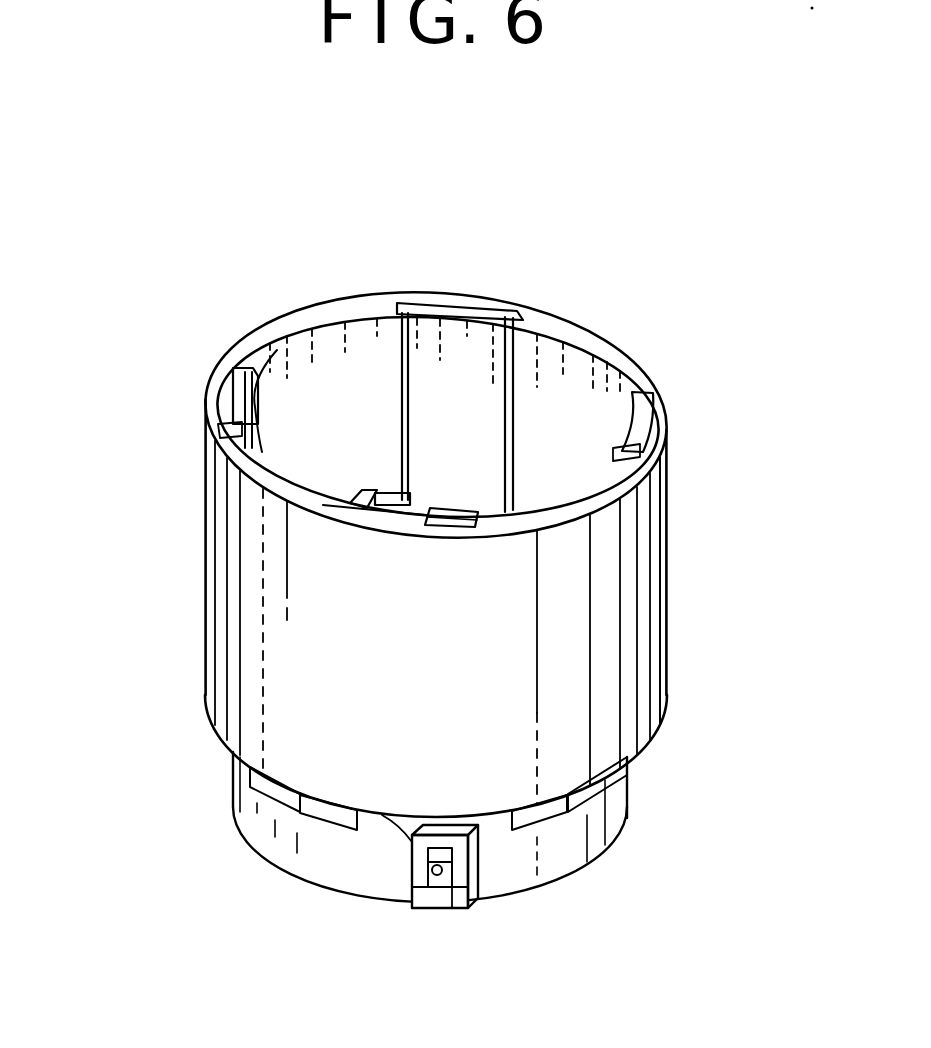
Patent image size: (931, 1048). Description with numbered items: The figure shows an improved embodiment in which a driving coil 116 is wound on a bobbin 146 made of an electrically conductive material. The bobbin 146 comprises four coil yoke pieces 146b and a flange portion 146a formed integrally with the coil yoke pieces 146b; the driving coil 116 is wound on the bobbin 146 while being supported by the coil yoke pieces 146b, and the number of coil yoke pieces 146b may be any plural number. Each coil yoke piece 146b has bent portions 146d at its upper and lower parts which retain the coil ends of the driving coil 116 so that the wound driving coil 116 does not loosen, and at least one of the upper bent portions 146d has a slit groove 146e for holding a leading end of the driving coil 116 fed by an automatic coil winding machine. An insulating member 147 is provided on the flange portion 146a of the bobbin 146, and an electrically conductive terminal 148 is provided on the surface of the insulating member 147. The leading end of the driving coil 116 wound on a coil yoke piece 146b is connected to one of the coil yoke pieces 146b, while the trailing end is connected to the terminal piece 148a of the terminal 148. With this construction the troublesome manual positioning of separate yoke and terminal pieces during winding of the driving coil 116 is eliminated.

The driving coil 116 is at (636, 610).
The bobbin 146 is at (521, 389).
The flange portion 146a is at (597, 827).
The coil yoke piece 146b is at (250, 402).
The bent portion 146d is at (430, 298).
The slit groove 146e is at (358, 490).
The insulating member 147 is at (462, 862).
The terminal 148 is at (443, 892).
The terminal piece 148a is at (430, 869).